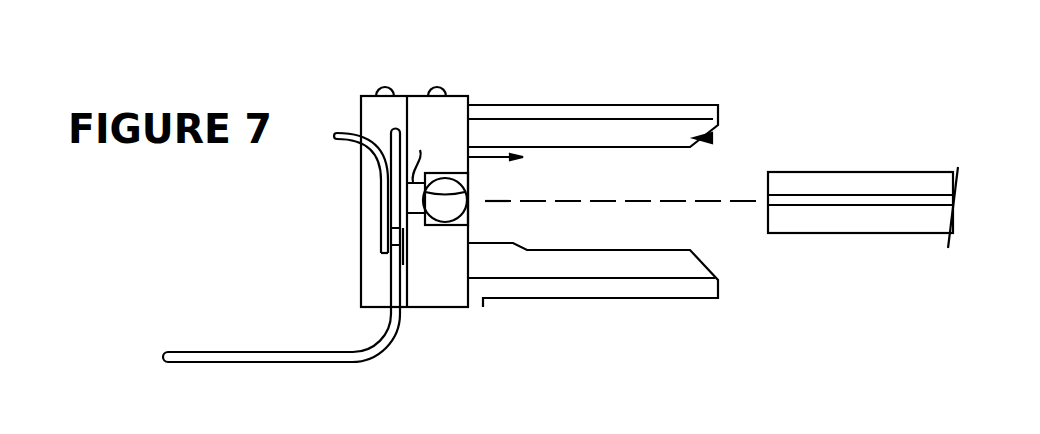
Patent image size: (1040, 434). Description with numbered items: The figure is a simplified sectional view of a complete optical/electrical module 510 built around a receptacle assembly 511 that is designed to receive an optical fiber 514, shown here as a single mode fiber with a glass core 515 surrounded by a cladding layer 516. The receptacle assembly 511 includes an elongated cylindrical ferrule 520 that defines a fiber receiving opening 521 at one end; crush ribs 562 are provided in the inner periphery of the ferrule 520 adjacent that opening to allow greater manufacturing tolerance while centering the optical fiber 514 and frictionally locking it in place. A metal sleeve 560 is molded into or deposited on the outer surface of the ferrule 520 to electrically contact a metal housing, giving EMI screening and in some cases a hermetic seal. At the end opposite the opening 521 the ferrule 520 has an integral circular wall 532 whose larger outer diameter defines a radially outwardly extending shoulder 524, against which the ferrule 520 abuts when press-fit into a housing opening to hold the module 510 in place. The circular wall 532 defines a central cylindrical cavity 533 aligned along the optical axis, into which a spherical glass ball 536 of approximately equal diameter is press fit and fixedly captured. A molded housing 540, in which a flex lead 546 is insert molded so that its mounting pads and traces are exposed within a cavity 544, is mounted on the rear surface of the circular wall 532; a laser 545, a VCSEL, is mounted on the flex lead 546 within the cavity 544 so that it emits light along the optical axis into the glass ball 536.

The optical/electrical module 510 is at (820, 330).
The receptacle assembly 511 is at (288, 232).
The optical fiber 514 is at (863, 194).
The glass core 515 is at (883, 202).
The cladding layer 516 is at (812, 187).
The ferrule 520 is at (642, 178).
The fiber receiving opening 521 is at (678, 233).
The shoulder 524 is at (468, 103).
The circular wall 532 is at (420, 287).
The cavity 533 is at (468, 184).
The glass ball 536 is at (455, 207).
The housing 540 is at (372, 290).
The cavity 544 is at (398, 142).
The laser 545 is at (390, 233).
The flex lead 546 is at (195, 350).
The metal sleeve 560 is at (588, 105).
The crush ribs 562 is at (523, 157).